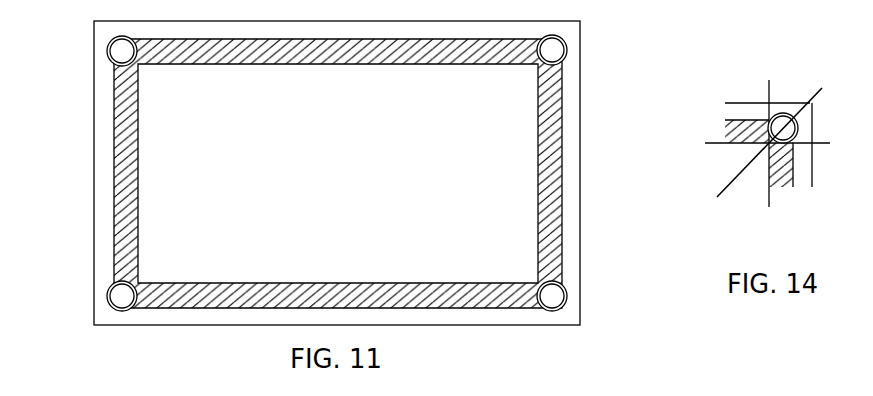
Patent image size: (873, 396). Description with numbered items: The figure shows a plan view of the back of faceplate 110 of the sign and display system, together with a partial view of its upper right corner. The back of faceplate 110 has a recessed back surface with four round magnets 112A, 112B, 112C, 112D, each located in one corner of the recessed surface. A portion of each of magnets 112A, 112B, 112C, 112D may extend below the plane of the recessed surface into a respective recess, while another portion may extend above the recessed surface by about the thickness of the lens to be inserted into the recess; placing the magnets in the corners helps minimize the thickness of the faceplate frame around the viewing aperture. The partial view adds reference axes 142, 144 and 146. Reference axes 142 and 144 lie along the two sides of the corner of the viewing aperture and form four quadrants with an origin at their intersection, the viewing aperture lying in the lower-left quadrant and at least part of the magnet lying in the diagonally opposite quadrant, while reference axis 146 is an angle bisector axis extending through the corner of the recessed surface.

In FIG. 11, the faceplate 110 is at (86, 172).
In FIG. 11, the magnet 112A is at (122, 297).
In FIG. 11, the magnet 112B is at (118, 53).
In FIG. 11, the magnet 112C is at (553, 51).
In FIG. 11, the magnet 112D is at (553, 298).
In FIG. 14, the reference axis 142 is at (712, 141).
In FIG. 14, the reference axis 144 is at (762, 198).
In FIG. 14, the angle bisector axis 146 is at (716, 191).